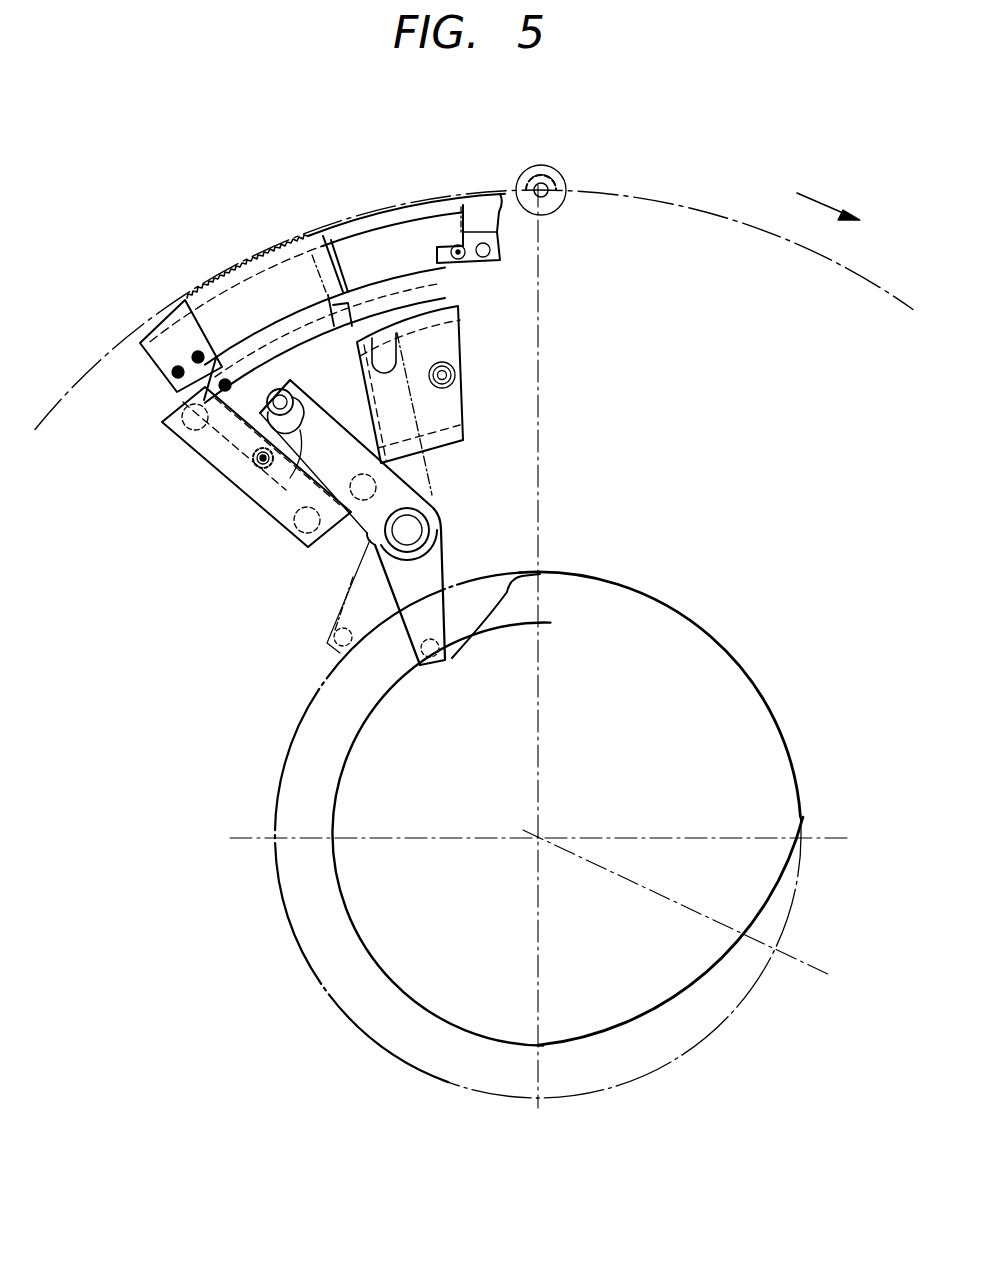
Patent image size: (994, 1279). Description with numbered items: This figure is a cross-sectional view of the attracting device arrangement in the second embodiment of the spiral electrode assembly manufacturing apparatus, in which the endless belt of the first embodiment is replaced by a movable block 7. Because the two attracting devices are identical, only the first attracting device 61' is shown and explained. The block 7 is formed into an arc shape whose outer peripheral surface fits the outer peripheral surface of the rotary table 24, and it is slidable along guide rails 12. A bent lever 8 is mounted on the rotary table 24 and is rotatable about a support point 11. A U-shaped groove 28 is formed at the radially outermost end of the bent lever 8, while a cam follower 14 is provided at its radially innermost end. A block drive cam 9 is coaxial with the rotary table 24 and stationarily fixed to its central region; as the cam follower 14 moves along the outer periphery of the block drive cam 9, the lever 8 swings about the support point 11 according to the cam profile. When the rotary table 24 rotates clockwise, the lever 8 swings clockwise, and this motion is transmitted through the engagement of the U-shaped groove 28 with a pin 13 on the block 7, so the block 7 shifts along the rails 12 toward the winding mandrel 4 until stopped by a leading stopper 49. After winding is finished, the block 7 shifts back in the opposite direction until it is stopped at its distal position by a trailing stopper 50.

The winding mandrel 4 is at (560, 186).
The movable block 7 is at (230, 302).
The bent lever 8 is at (443, 567).
The block drive cam 9 is at (727, 657).
The support point 11 is at (380, 527).
The guide rails 12 is at (443, 303).
The pin 13 is at (279, 390).
The cam follower 14 is at (417, 657).
The rotary table 24 is at (738, 210).
The U-shaped groove 28 is at (290, 478).
The leading stopper 49 is at (470, 202).
The trailing stopper 50 is at (160, 338).
The first attracting device 61' is at (354, 265).